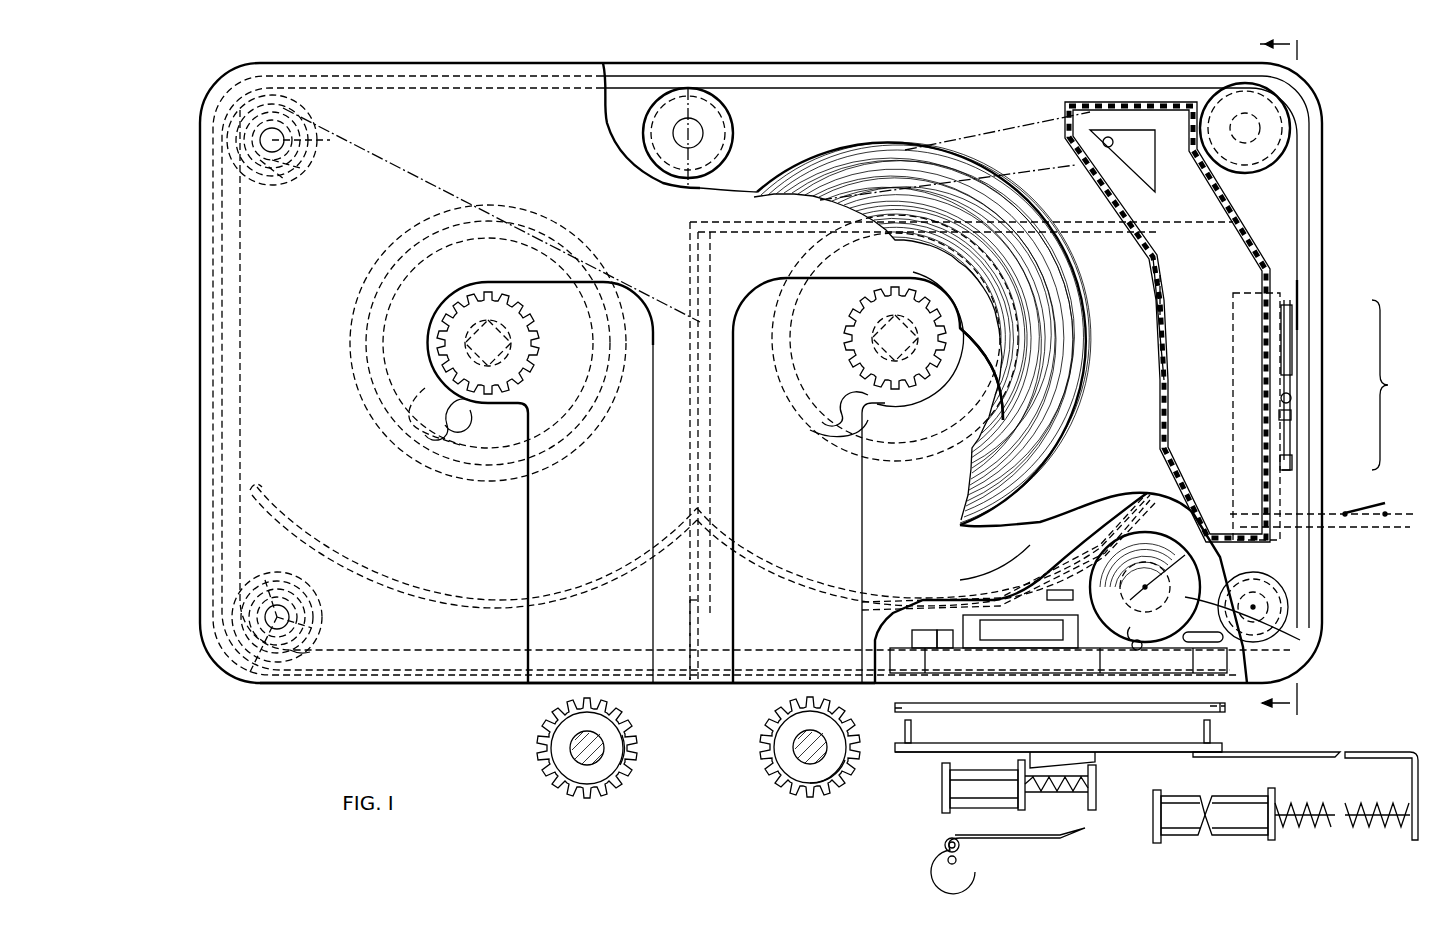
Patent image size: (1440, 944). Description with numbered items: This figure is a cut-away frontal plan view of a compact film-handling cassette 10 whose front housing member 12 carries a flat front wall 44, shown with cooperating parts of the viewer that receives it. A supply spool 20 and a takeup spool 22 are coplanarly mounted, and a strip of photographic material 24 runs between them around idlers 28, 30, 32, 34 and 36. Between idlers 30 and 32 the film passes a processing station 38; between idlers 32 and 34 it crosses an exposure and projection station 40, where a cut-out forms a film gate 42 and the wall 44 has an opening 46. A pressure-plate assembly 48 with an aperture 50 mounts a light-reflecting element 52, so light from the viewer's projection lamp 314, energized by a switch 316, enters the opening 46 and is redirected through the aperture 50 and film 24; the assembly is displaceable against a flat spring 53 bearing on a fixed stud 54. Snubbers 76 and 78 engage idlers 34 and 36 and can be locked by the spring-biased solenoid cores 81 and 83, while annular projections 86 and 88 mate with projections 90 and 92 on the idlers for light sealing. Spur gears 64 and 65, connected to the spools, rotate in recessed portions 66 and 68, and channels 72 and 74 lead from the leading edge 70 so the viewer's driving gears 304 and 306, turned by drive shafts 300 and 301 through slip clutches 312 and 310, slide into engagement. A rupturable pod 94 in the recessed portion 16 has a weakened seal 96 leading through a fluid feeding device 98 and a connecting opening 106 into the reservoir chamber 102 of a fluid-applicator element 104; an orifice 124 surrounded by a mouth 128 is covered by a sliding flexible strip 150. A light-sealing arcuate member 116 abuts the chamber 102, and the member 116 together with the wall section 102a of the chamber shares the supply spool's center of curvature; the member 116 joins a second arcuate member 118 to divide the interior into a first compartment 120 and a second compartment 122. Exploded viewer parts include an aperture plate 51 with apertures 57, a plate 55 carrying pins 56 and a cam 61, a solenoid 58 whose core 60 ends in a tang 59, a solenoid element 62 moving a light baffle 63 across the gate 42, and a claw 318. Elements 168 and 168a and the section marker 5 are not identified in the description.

The film handling cassette 10 is at (792, 60).
The front housing member 12 is at (462, 100).
The first compartment 120 is at (868, 112).
The front wall 44 is at (535, 131).
The idler 28 is at (720, 122).
The idler 30 is at (1300, 108).
The snubber 78 is at (262, 170).
The movable solenoid core 83 is at (272, 118).
The idler 36 is at (303, 140).
The annular projection 88 is at (300, 156).
The annular projection 92 is at (288, 172).
The snubber 76 is at (305, 602).
The annular projection 86 is at (270, 590).
The annular projection 90 is at (312, 626).
The movable solenoid core 81 is at (250, 672).
The idler roller 34 is at (300, 655).
The leading edge 70 is at (482, 683).
The recessed portion 68 is at (550, 283).
The takeup spool 22 is at (402, 278).
The spur gear 65 is at (528, 335).
The recessed channel 74 is at (530, 490).
The recessed channel 72 is at (735, 497).
The supply spool 20 is at (998, 328).
The recessed portion 66 is at (850, 280).
The spur gear 64 is at (850, 338).
The photographic material 24 is at (1090, 320).
The fluid feeding device 98 is at (1010, 135).
The weakened seal 96 is at (1085, 215).
The reservoir chamber 102 is at (1240, 225).
The wall section 102a is at (1150, 252).
The connecting opening 106 is at (1100, 148).
The rupturable pod 94 is at (1122, 288).
The fluid-applicator element 104 is at (1300, 284).
The flexible strip 150 is at (1292, 342).
The mouth 128 is at (1292, 383).
The spring end 168a is at (1292, 406).
The spring 168 is at (1300, 447).
The processing station 38 is at (1391, 385).
The orifice 124 is at (1250, 393).
The switch 316 is at (1348, 512).
The opening 46 is at (1128, 535).
The aperture 50 is at (1145, 650).
The idler 32 is at (1238, 570).
The light-reflecting element 52 is at (1300, 640).
The projection lamp 314 is at (1075, 545).
The pressure-plate assembly 48 is at (930, 640).
The flat spring 53 is at (985, 580).
The fixed stud 54 is at (1025, 570).
The film gate 42 is at (1195, 660).
The light-sealing arcuate member 118 is at (598, 580).
The light-sealing arcuate member 116 is at (780, 580).
The recessed portion 16 is at (700, 598).
The second compartment 122 is at (688, 628).
The section line 5 is at (1268, 372).
The apertures 57 is at (900, 708).
The aperture plate 51 is at (1228, 706).
The plate 55 is at (1050, 748).
The pins 56 is at (915, 732).
The cam 61 is at (1085, 755).
The exposure and projection station 40 is at (923, 752).
The solenoid 58 is at (938, 796).
The tang 59 is at (1100, 770).
The solenoid core 60 is at (1062, 785).
The claw 318 is at (1008, 845).
The light baffle 63 is at (1262, 758).
The solenoid element 62 is at (1230, 835).
The slip-clutch arrangement 310 is at (602, 795).
The drive shaft 301 is at (570, 741).
The driving spur gear 306 is at (630, 748).
The drive shaft 300 is at (800, 795).
The slip-clutch arrangement 312 is at (785, 752).
The driving spur gear 304 is at (835, 790).